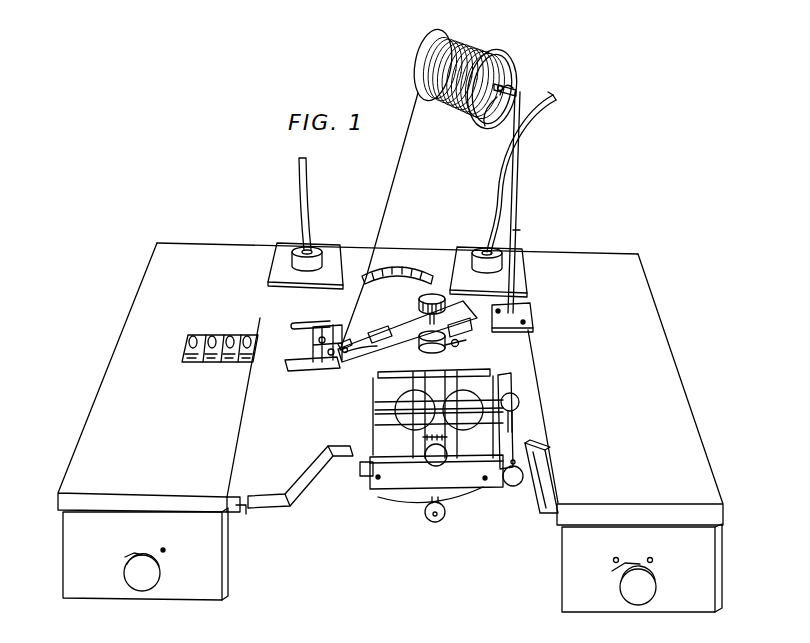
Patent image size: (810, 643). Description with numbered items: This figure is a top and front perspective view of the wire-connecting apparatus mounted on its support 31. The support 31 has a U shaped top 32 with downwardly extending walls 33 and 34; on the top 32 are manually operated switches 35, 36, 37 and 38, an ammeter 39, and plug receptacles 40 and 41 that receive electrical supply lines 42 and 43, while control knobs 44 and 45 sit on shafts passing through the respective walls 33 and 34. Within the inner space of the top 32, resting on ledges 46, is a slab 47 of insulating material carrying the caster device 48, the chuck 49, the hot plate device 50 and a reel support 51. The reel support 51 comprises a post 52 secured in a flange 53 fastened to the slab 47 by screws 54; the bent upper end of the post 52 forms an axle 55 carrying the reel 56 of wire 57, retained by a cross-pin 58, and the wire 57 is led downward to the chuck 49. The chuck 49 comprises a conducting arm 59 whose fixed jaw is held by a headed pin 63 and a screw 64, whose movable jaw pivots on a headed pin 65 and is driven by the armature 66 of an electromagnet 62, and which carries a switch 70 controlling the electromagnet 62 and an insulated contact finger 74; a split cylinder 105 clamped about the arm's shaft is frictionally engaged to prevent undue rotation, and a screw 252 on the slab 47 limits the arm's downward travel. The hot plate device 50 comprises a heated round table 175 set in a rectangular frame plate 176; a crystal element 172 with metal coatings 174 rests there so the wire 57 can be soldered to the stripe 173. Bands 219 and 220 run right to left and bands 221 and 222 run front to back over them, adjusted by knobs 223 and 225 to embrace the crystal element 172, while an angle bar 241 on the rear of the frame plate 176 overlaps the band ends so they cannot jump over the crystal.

The support 31 is at (657, 307).
The U shaped top 32 is at (614, 256).
The wall 33 is at (72, 538).
The wall 34 is at (705, 565).
The manually operated switch 35 is at (190, 343).
The manually operated switch 36 is at (212, 337).
The manually operated switch 37 is at (229, 337).
The manually operated switch 38 is at (248, 337).
The ammeter 39 is at (404, 262).
The plug receptacle 40 is at (320, 248).
The plug receptacle 41 is at (478, 250).
The electrical supply line 42 is at (298, 172).
The electrical supply line 43 is at (496, 177).
The control knob 44 is at (146, 583).
The control knob 45 is at (645, 596).
The ledge 46 is at (232, 513).
The slab 47 is at (300, 463).
The caster device 48 is at (336, 322).
The chuck 49 is at (377, 349).
The hot plate device 50 is at (472, 371).
The reel support 51 is at (520, 233).
The post 52 is at (521, 152).
The flange 53 is at (532, 310).
The screw 54 is at (525, 322).
The axle 55 is at (505, 84).
The reel 56 is at (503, 62).
The wire 57 is at (462, 44).
The cross-pin 58 is at (496, 123).
The arm 59 is at (390, 333).
The electromagnet 62 is at (459, 334).
The headed pin 63 is at (347, 352).
The screw 64 is at (369, 345).
The headed pin 65 is at (345, 358).
The armature 66 is at (456, 347).
The switch 70 is at (417, 318).
The contact finger 74 is at (343, 355).
The split cylinder 105 is at (424, 352).
The crystal element 172 is at (413, 432).
The stripe 173 is at (500, 385).
The metal coating 174 is at (459, 428).
The round table 175 is at (378, 421).
The frame plate 176 is at (493, 452).
The band 219 is at (521, 402).
The band 220 is at (508, 437).
The band 221 is at (456, 448).
The band 222 is at (418, 452).
The knob 223 is at (518, 408).
The knob 225 is at (438, 465).
The angle bar 241 is at (485, 373).
The screw 252 is at (342, 345).